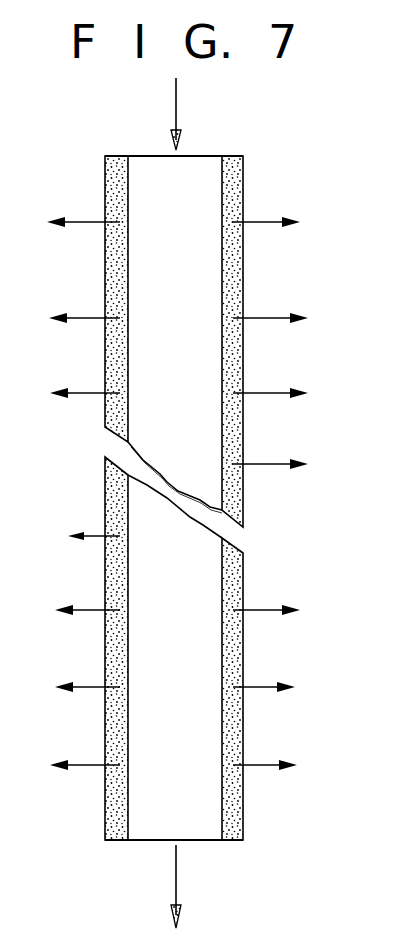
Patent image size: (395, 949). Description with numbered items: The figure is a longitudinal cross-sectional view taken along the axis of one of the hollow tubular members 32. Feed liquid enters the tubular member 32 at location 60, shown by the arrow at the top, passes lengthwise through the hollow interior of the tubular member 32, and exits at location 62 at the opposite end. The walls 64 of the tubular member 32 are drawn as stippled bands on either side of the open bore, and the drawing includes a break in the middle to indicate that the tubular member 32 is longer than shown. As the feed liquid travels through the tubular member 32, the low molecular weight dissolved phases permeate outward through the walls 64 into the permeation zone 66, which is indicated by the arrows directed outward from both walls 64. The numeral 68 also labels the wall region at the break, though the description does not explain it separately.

The hollow tubular member 32 is at (94, 842).
The feed liquid entry location 60 is at (178, 116).
The exit location 62 is at (178, 880).
The walls of the tubular member 64 is at (112, 268).
The permeation zone 66 is at (249, 224).
The tube wall 68 is at (238, 506).